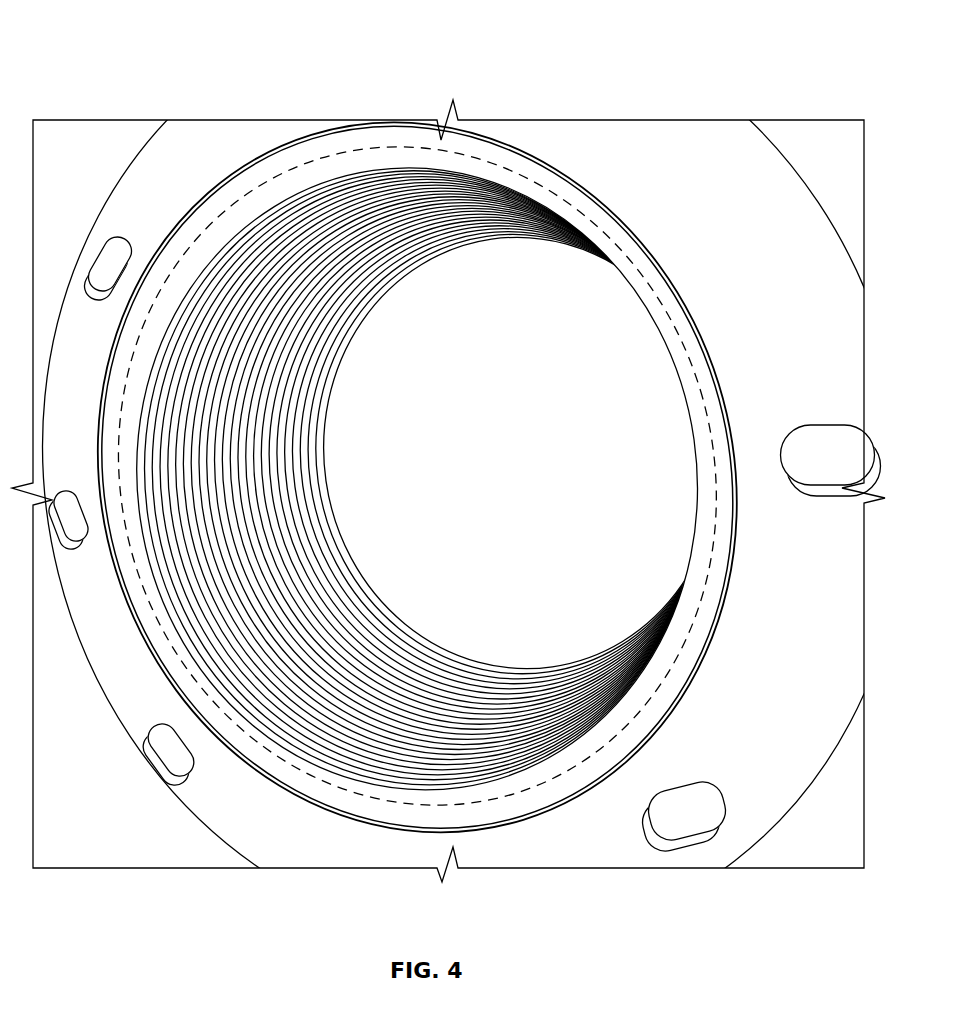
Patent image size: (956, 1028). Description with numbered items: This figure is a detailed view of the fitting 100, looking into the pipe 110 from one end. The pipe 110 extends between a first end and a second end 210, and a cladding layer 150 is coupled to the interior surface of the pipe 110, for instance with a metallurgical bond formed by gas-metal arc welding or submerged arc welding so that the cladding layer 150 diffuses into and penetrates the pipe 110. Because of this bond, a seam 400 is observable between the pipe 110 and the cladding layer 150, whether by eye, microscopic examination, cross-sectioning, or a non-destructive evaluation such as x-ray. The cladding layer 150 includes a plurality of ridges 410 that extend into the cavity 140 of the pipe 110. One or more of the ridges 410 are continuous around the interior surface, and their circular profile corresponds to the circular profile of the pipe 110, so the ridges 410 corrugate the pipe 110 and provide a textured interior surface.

The fitting 100 is at (103, 50).
The pipe 110 is at (665, 291).
The cavity 140 is at (510, 294).
The cladding layer 150 is at (708, 477).
The second end 210 is at (125, 598).
The seam 400 is at (710, 430).
The ridges 410 is at (266, 450).